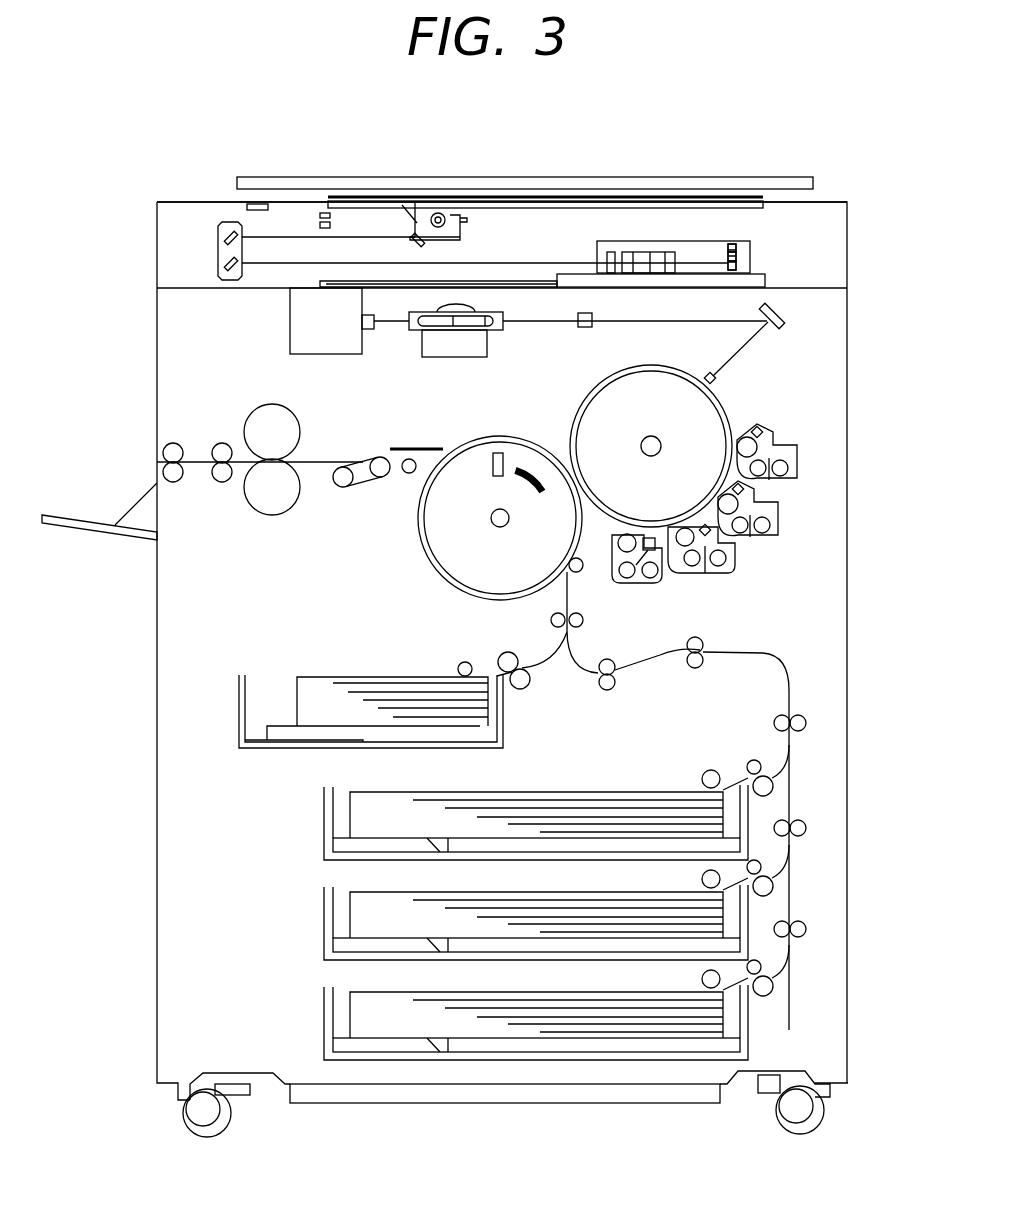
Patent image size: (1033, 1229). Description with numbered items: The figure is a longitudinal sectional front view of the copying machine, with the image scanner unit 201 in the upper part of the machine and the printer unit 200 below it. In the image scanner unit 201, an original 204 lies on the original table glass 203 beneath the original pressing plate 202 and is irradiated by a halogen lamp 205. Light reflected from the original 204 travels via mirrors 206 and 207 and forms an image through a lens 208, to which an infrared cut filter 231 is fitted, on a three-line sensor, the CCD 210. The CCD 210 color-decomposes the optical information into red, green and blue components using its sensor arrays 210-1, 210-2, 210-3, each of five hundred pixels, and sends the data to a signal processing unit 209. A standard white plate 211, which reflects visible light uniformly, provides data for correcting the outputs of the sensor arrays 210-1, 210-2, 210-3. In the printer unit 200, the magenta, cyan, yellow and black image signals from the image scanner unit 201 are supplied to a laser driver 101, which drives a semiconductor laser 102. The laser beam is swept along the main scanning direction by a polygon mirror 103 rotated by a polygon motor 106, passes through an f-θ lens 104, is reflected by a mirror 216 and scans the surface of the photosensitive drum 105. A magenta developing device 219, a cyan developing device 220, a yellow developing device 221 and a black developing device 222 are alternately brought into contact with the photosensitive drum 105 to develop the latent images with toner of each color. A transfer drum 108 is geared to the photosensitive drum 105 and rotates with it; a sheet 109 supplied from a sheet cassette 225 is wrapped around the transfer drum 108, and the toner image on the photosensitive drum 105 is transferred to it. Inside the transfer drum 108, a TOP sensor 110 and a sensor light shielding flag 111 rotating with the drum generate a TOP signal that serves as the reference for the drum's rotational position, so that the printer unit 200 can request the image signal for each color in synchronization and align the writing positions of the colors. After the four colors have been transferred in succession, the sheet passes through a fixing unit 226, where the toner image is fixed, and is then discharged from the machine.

The printer unit 200 is at (848, 405).
The image scanner unit 201 is at (830, 201).
The original pressing plate 202 is at (345, 177).
The original table glass 203 is at (690, 201).
The original 204 is at (556, 196).
The halogen lamp 205 is at (440, 211).
The mirror 206 is at (413, 239).
The mirror 207 is at (222, 224).
The lens 208 is at (645, 250).
The signal processing unit 209 is at (787, 285).
The three-line sensor (CCD) 210 is at (735, 247).
The sensor array 210-1 is at (747, 243).
The sensor array 210-2 is at (747, 256).
The sensor array 210-3 is at (765, 270).
The standard white plate 211 is at (260, 204).
The infrared cut filter 231 is at (601, 256).
The laser driver 101 is at (290, 320).
The semiconductor laser 102 is at (368, 330).
The polygon mirror 103 is at (468, 328).
The f-θ lens 104 is at (585, 327).
The photosensitive drum 105 is at (582, 412).
The polygon motor 106 is at (440, 357).
The transfer drum 108 is at (420, 540).
The sheet 109 is at (610, 790).
The TOP sensor 110 is at (492, 466).
The sensor light shielding flag 111 is at (532, 492).
The mirror 216 is at (772, 326).
The magenta developing device 219 is at (700, 576).
The cyan developing device 220 is at (786, 512).
The yellow developing device 221 is at (785, 440).
The black developing device 222 is at (630, 581).
The sheet cassette 225 is at (327, 799).
The fixing unit 226 is at (271, 515).